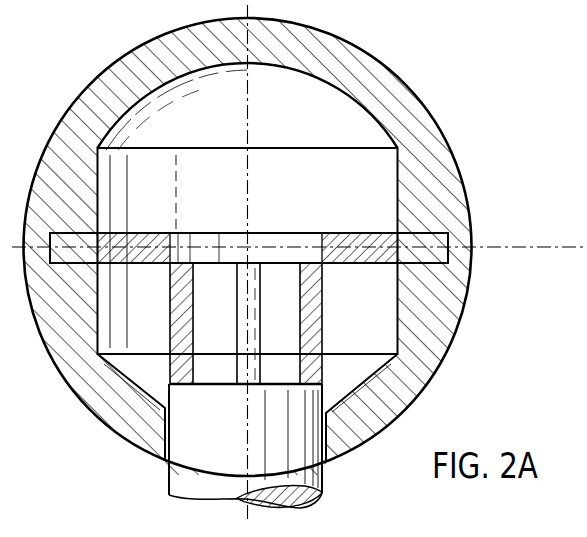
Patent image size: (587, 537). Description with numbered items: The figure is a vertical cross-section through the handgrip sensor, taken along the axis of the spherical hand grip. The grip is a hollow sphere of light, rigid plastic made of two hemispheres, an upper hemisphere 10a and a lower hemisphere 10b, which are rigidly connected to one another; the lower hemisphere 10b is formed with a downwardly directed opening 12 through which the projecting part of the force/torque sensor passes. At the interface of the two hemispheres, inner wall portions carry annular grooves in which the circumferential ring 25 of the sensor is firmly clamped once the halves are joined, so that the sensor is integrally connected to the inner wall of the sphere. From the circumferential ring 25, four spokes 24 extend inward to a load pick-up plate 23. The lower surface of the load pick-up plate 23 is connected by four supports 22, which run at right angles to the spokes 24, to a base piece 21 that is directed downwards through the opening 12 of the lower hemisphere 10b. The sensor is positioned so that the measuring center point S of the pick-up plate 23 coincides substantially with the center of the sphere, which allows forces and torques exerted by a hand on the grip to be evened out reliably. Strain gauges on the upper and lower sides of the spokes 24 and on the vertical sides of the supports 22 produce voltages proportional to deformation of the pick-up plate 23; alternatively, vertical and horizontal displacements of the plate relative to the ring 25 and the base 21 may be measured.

The upper hemisphere 10a is at (100, 97).
The lower hemisphere 10b is at (68, 363).
The opening 12 is at (165, 462).
The base piece 21 is at (308, 476).
The supports 22 is at (243, 321).
The load pick-up plate 23 is at (207, 243).
The spokes 24 is at (133, 258).
The circumferential ring 25 is at (413, 245).
The measuring center point S is at (254, 241).